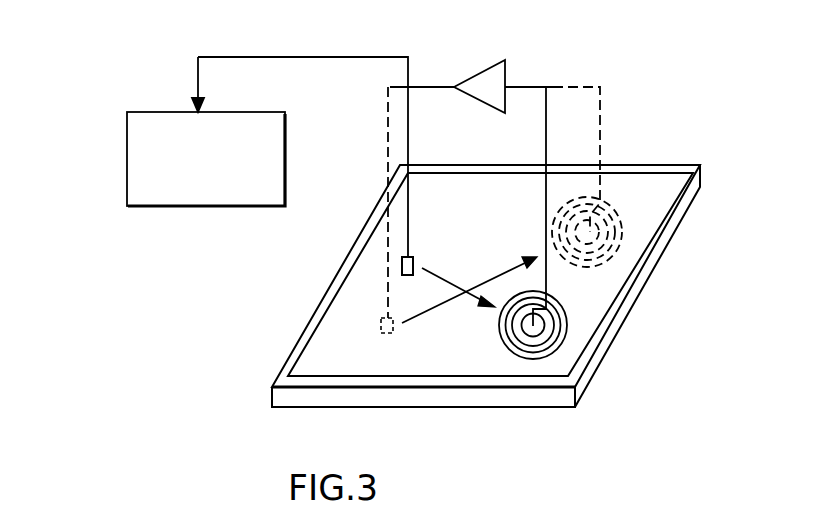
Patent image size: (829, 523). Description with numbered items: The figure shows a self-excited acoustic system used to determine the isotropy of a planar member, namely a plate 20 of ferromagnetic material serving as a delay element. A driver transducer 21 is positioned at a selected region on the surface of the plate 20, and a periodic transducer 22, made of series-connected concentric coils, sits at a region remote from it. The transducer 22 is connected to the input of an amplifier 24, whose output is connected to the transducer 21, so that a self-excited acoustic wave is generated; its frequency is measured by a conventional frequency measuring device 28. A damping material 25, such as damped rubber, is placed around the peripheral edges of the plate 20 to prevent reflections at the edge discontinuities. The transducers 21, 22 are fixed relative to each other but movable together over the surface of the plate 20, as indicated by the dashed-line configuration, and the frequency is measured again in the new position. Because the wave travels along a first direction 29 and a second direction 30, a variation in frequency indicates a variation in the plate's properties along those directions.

The plate 20 is at (667, 297).
The driver transducer 21 is at (413, 263).
The transducer 22 is at (622, 222).
The amplifier 24 is at (476, 78).
The damping material 25 is at (662, 165).
The frequency measuring device 28 is at (127, 191).
The first direction 29 is at (446, 283).
The second direction 30 is at (440, 304).